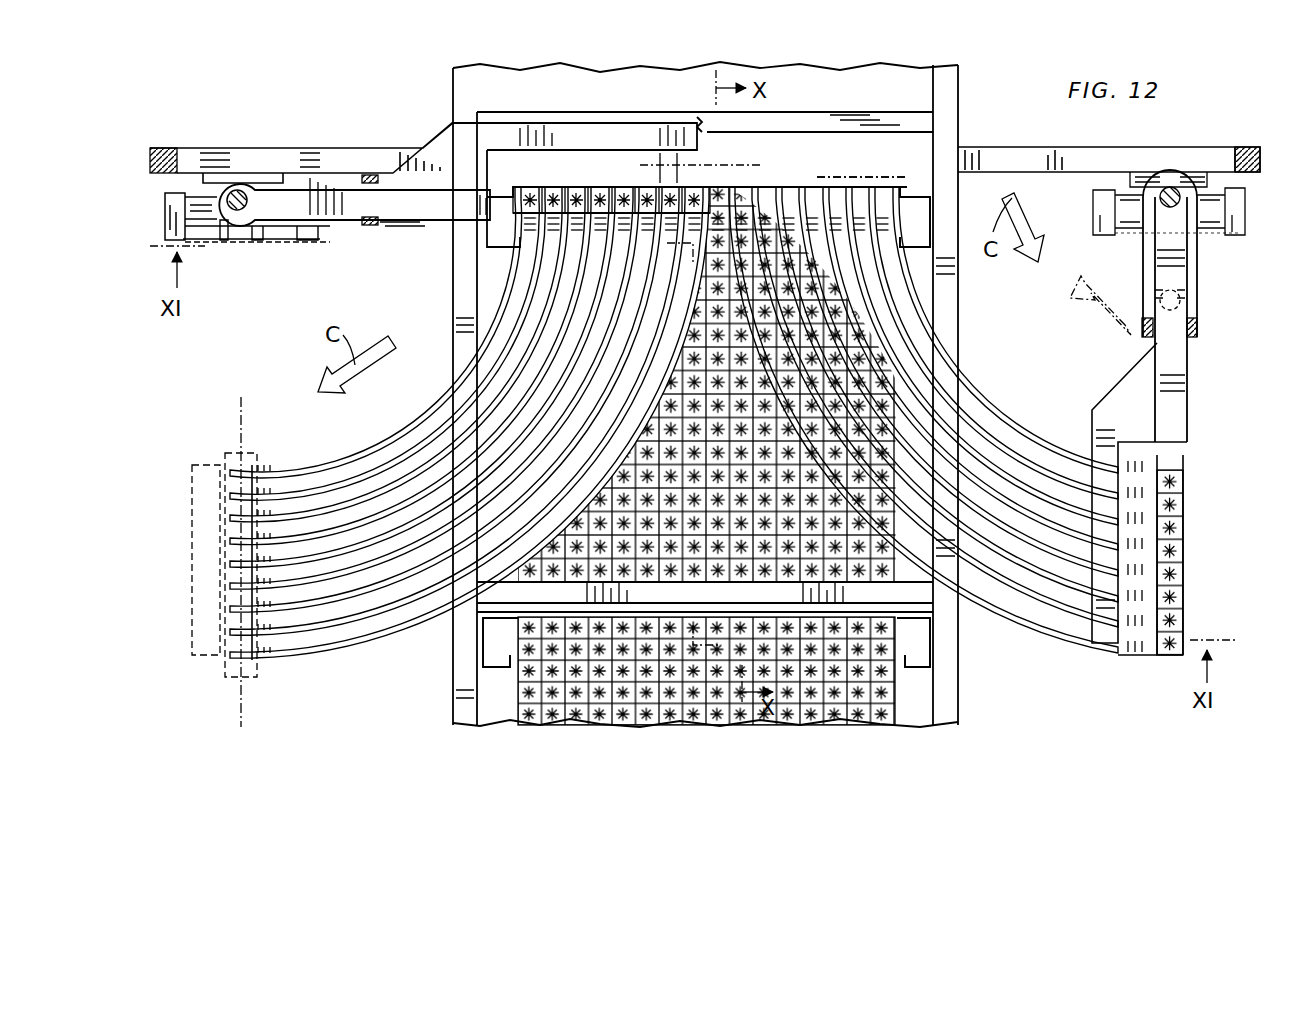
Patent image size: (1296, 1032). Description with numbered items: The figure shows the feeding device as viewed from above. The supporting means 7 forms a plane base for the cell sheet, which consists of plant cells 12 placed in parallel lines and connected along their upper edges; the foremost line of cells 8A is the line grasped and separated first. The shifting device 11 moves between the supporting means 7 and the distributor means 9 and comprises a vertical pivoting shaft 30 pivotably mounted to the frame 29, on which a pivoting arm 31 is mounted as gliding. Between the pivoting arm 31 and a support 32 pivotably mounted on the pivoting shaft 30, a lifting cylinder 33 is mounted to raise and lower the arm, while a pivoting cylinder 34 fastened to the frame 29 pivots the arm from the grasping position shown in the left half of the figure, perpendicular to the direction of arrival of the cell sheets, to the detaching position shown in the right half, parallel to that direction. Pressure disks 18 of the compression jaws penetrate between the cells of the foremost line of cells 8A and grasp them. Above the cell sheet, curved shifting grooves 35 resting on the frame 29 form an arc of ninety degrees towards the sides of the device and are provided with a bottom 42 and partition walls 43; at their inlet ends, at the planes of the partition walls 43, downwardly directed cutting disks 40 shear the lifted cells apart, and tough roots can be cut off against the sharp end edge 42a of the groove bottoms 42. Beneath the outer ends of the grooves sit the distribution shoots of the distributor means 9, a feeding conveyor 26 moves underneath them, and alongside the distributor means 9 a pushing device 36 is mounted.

The supporting means 7 is at (490, 646).
The foremost line of cells 8A is at (601, 190).
The distributor means 9 is at (262, 663).
The shifting device 11 is at (250, 268).
The plant cells 12 is at (565, 650).
The pressure disks 18 is at (680, 170).
The feeding conveyor 26 is at (242, 723).
The frame 29 is at (373, 160).
The pivoting shaft 30 is at (238, 190).
The pivoting arm 31 is at (283, 200).
The support 32 is at (325, 180).
The lifting cylinder 33 is at (350, 213).
The pivoting cylinder 34 is at (195, 205).
The shifting grooves 35 is at (543, 352).
The pushing device 36 is at (198, 668).
The cutting disks 40 is at (790, 197).
The bottom 42 is at (527, 254).
The sharp end edge 42a is at (547, 210).
The partition walls 43 is at (552, 296).